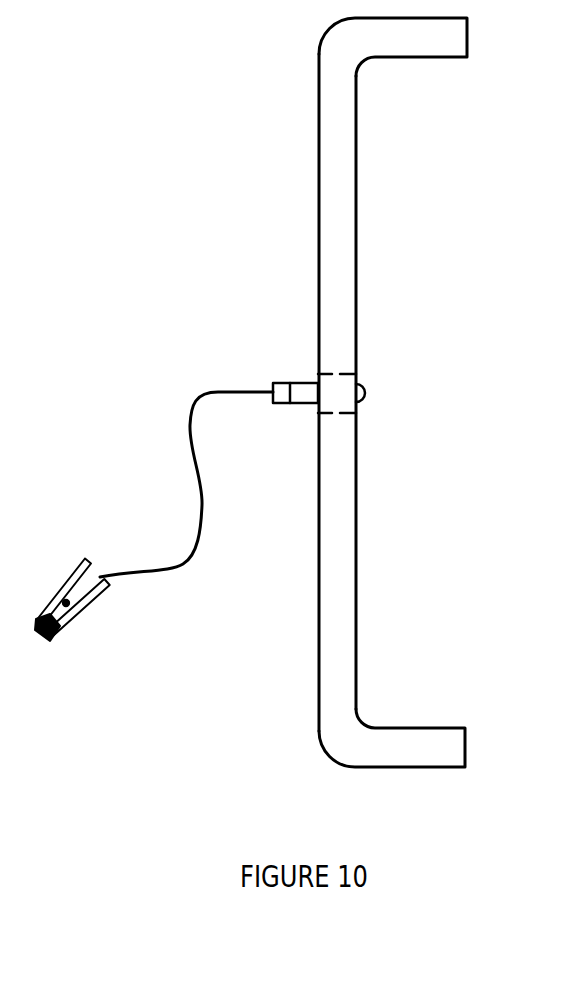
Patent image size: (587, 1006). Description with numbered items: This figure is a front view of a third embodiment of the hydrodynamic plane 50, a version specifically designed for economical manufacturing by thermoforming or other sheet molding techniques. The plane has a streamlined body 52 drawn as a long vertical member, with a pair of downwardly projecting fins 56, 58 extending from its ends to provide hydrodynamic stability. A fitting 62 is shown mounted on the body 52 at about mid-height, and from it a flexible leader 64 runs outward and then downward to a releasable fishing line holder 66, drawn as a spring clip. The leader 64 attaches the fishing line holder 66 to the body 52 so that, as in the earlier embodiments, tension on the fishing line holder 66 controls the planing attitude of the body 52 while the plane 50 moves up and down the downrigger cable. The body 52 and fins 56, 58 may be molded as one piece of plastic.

The hydrodynamic plane 50 is at (344, 392).
The body 52 is at (319, 168).
The fin 56 is at (415, 58).
The fin 58 is at (407, 727).
The connector 62 is at (288, 382).
The leader 64 is at (184, 566).
The releasable fishing line holder 66 is at (63, 620).